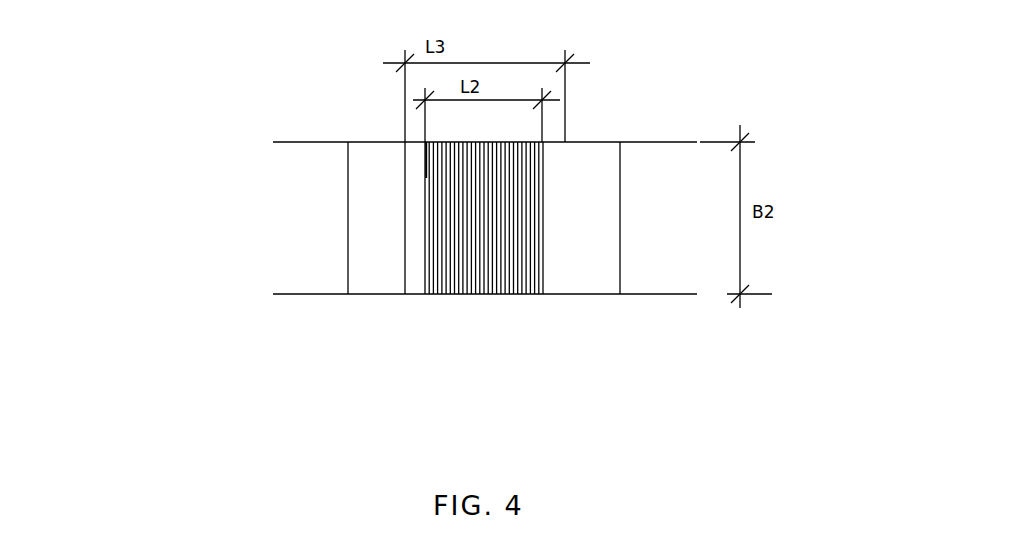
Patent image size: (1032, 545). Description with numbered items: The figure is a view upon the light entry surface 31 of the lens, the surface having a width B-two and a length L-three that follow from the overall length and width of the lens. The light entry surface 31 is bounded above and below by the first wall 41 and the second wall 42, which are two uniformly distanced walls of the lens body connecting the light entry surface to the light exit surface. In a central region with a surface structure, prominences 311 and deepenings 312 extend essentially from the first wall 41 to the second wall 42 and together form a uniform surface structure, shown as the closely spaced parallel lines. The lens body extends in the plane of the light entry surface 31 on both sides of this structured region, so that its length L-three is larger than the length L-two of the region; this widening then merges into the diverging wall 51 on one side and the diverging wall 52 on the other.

The second wall 42 is at (365, 141).
The first wall 41 is at (647, 294).
The diverging wall 51 is at (376, 270).
The diverging wall 52 is at (592, 277).
The light entry surface 31 is at (447, 295).
The prominences 311 is at (508, 277).
The deepenings 312 is at (510, 295).